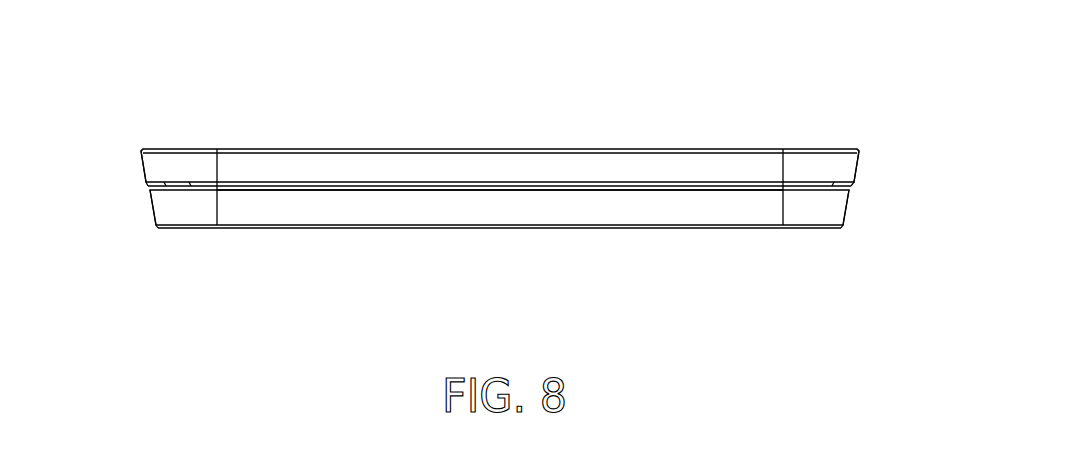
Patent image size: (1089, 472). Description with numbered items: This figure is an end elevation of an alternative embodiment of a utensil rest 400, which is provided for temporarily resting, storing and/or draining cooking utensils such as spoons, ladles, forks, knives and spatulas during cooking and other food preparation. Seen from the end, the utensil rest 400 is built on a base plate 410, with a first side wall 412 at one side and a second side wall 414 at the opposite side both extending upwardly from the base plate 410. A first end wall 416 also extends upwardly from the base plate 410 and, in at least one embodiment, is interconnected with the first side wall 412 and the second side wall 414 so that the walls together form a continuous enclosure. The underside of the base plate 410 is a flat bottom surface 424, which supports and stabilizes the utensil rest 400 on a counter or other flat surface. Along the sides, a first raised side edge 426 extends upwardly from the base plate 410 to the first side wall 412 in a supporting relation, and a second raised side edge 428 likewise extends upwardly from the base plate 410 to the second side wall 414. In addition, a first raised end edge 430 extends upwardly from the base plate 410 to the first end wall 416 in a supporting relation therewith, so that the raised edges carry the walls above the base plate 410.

The utensil rest 400 is at (958, 53).
The base plate 410 is at (458, 228).
The first side wall 412 is at (141, 165).
The second side wall 414 is at (856, 165).
The first end wall 416 is at (498, 167).
The flat bottom surface 424 is at (230, 228).
The first raised side edge 426 is at (149, 207).
The second raised side edge 428 is at (846, 207).
The first raised end edge 430 is at (600, 205).